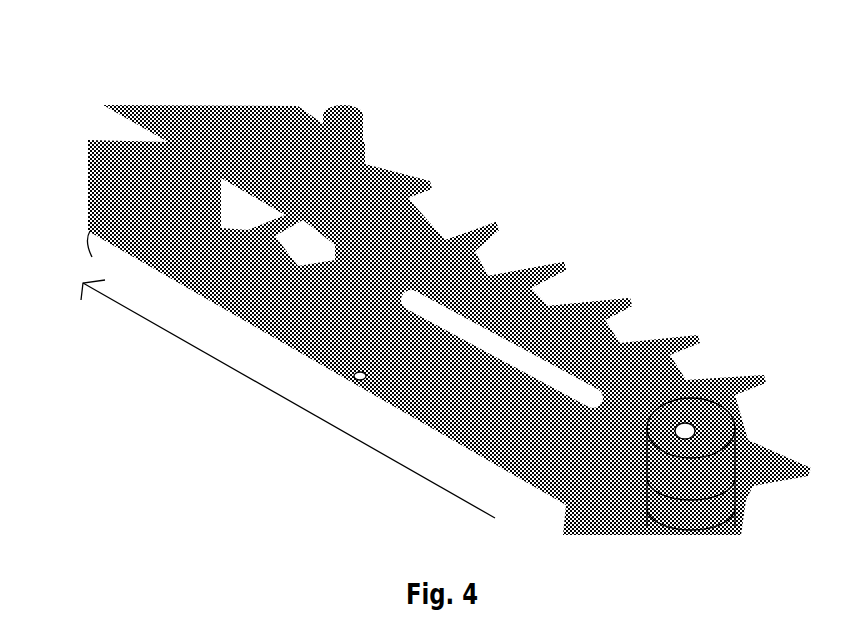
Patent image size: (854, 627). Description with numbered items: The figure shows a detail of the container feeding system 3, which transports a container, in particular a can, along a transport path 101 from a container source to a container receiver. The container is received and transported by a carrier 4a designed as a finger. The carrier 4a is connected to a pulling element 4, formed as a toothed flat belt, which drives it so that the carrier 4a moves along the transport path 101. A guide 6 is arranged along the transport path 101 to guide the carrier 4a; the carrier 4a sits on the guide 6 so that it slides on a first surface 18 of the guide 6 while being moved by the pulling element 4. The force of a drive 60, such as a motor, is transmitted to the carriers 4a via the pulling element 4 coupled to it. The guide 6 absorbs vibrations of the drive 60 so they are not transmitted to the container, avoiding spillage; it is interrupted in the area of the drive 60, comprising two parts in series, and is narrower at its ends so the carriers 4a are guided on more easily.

The container feeding system 3 is at (105, 72).
The pulling element 4 is at (538, 297).
The carrier 4a is at (468, 220).
The first surface 18 is at (480, 268).
The drive 60 is at (737, 417).
The guide 6 is at (350, 370).
The transport path 101 is at (288, 399).